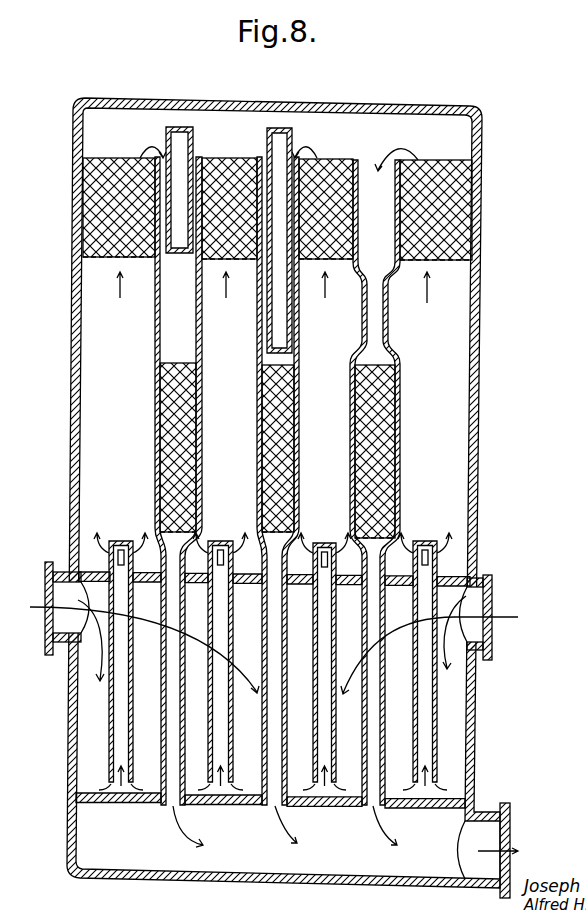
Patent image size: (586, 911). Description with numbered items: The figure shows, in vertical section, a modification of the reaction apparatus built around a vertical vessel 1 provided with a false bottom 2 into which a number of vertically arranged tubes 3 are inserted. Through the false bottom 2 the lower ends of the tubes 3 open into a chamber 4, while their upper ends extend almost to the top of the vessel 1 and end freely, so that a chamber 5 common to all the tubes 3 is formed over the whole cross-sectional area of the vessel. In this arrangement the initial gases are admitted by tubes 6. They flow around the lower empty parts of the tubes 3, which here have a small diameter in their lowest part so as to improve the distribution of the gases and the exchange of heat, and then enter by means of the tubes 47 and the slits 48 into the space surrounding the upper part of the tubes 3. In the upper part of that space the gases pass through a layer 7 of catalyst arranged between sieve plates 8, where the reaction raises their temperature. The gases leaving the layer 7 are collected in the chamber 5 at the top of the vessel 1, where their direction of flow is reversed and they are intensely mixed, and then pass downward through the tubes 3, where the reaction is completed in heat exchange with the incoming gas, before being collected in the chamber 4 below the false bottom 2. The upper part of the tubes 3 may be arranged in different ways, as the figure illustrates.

The vessel 1 is at (77, 315).
The false bottom 2 is at (112, 805).
The tubes 3 is at (155, 410).
The chamber 4 is at (345, 850).
The chamber 5 is at (279, 147).
The tubes 6 is at (46, 577).
The catalyst layer 7 is at (87, 193).
The sieve plates 8 is at (93, 257).
The tubes 47 is at (110, 702).
The slits 48 is at (112, 558).